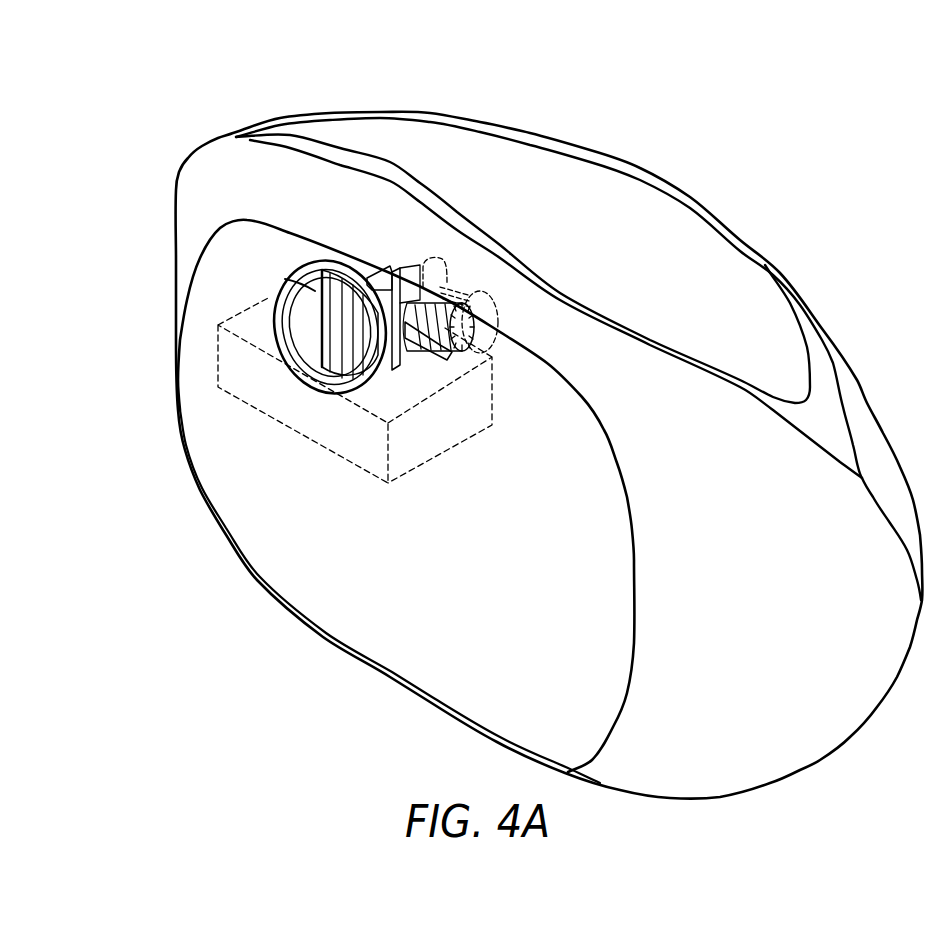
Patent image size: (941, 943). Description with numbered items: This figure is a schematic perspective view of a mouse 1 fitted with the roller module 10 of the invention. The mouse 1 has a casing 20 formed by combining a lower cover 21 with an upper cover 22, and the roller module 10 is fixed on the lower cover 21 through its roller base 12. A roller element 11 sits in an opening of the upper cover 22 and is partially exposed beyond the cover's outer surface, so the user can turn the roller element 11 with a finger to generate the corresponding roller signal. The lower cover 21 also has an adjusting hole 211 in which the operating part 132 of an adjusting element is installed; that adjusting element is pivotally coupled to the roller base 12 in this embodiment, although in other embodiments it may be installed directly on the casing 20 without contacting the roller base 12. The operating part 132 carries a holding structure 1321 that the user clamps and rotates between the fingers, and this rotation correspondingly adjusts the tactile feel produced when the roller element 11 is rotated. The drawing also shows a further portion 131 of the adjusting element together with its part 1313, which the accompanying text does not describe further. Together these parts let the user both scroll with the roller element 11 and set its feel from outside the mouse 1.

The mouse 1 is at (63, 61).
The roller module 10 is at (343, 306).
The roller element 11 is at (473, 303).
The roller base 12 is at (232, 358).
The bracket 131 is at (434, 258).
The bracket tab 1313 is at (380, 265).
The operating part 132 is at (313, 328).
The holding structure 1321 is at (333, 327).
The casing 20 is at (233, 133).
The lower cover 21 is at (200, 306).
The adjusting hole 211 is at (273, 280).
The upper cover 22 is at (873, 452).